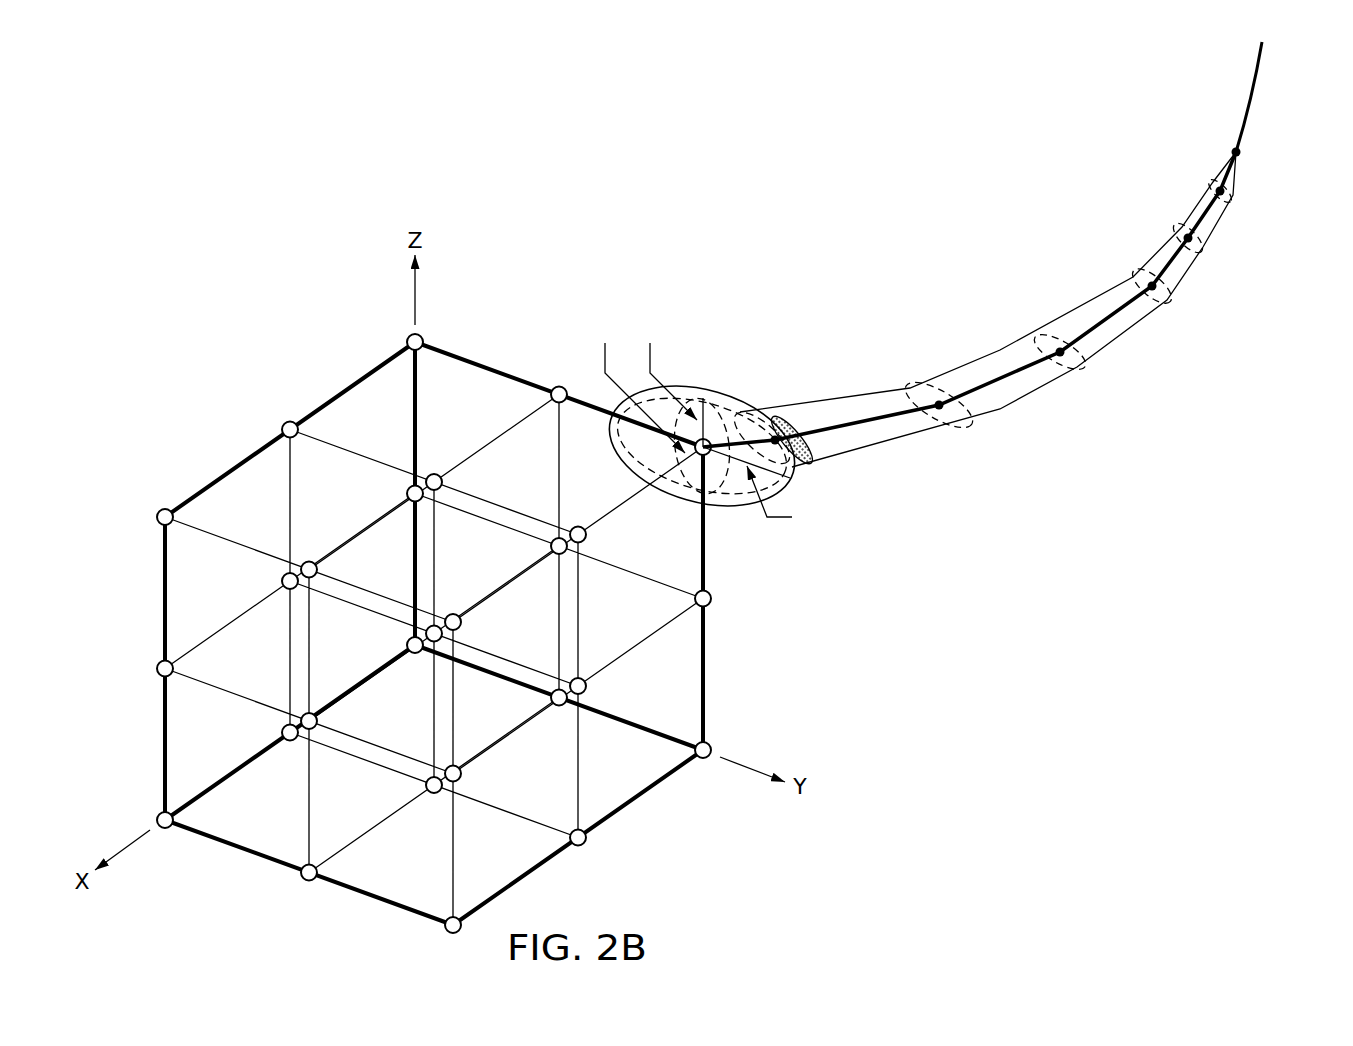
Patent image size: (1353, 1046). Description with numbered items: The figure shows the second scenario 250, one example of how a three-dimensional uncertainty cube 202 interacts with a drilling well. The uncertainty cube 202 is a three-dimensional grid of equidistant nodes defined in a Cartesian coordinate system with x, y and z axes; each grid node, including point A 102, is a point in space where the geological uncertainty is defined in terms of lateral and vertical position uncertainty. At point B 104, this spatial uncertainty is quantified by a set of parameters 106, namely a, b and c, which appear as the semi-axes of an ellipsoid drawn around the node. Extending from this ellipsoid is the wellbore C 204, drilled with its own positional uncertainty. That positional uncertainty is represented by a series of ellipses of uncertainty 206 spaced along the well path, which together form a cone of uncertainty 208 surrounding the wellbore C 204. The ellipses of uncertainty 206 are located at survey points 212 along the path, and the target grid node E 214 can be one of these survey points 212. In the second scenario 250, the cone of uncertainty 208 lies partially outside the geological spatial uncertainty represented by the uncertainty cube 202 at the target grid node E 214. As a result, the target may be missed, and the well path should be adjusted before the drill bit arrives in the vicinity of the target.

The point A 102 is at (287, 411).
The point B 104 is at (1015, 277).
The parameters 106 is at (738, 505).
The uncertainty cube 202 is at (318, 264).
The wellbore C 204 is at (1256, 98).
The ellipses of uncertainty 206 is at (1184, 276).
The cone of uncertainty 208 is at (985, 372).
The survey points 212 is at (1238, 160).
The target grid node E 214 is at (808, 448).
The scenario 2 250 is at (540, 206).